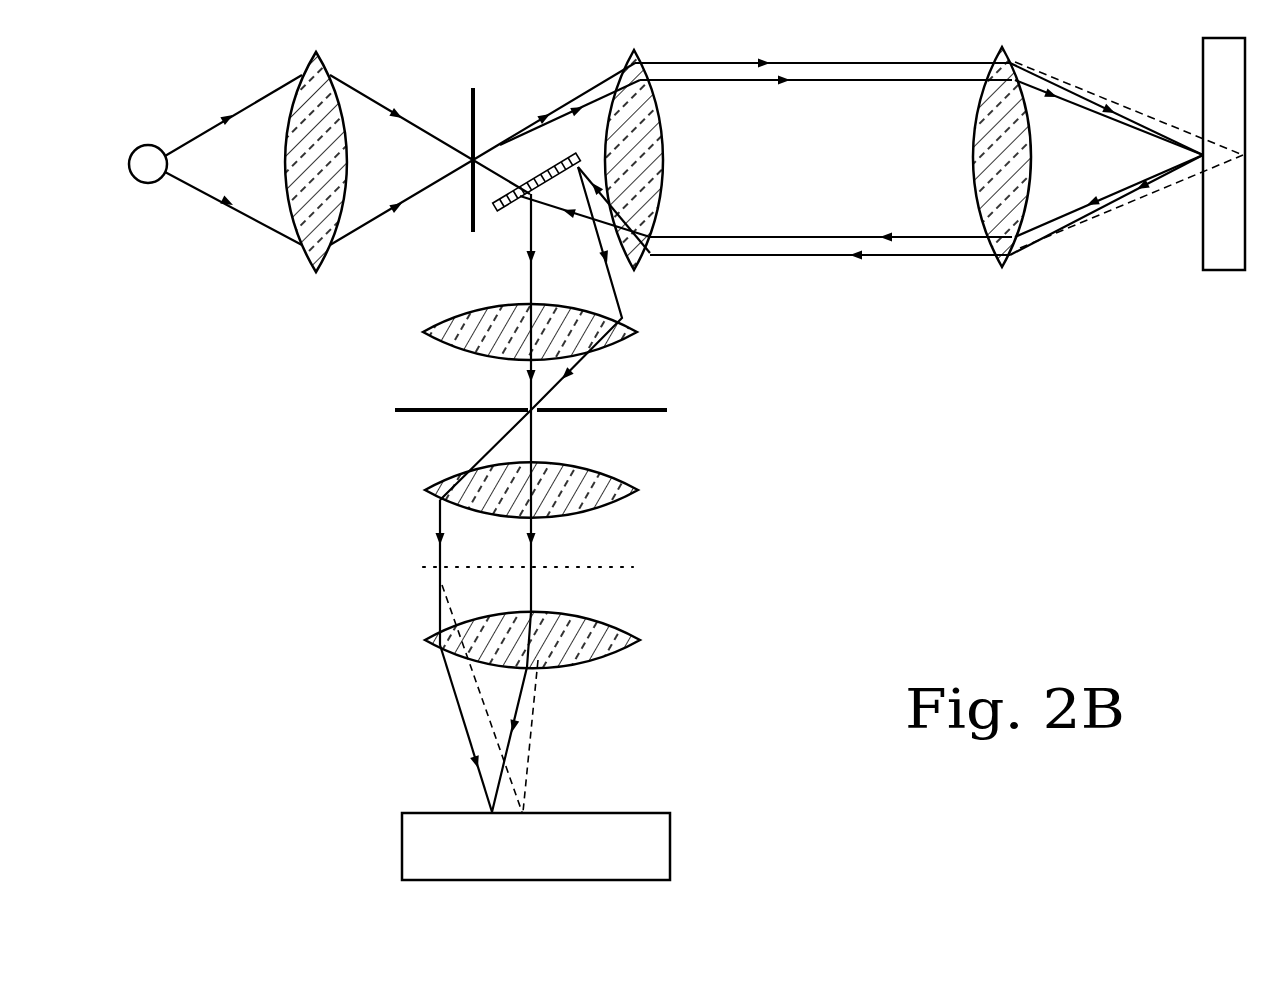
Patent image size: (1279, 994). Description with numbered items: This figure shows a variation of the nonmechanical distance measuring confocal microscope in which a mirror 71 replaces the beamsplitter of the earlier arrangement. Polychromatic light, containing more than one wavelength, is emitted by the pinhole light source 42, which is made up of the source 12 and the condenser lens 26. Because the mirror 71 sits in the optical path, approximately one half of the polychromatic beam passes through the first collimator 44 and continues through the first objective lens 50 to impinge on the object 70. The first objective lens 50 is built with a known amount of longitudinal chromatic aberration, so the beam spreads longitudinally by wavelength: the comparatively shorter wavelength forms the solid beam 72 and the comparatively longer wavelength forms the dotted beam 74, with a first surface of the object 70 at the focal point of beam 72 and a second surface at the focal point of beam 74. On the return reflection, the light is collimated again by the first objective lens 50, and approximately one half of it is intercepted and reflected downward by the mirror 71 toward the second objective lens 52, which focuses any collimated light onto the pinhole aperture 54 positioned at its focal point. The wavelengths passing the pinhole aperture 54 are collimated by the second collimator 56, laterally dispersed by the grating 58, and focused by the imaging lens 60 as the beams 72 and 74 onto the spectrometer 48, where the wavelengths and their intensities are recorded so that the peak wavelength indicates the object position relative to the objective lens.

The source 12 is at (150, 145).
The condenser lens 26 is at (316, 274).
The pinhole light source 42 is at (470, 106).
The first collimator 44 is at (634, 50).
The spectrometer 48 is at (552, 860).
The first objective lens 50 is at (1003, 49).
The second objective lens 52 is at (637, 329).
The pinhole aperture 54 is at (648, 409).
The second collimator 56 is at (638, 490).
The grating 58 is at (638, 568).
The imaging lens 60 is at (640, 640).
The object 70 is at (1228, 271).
The mirror 71 is at (507, 211).
The solid beam 72 is at (1162, 138).
The dotted beam 74 is at (1173, 186).